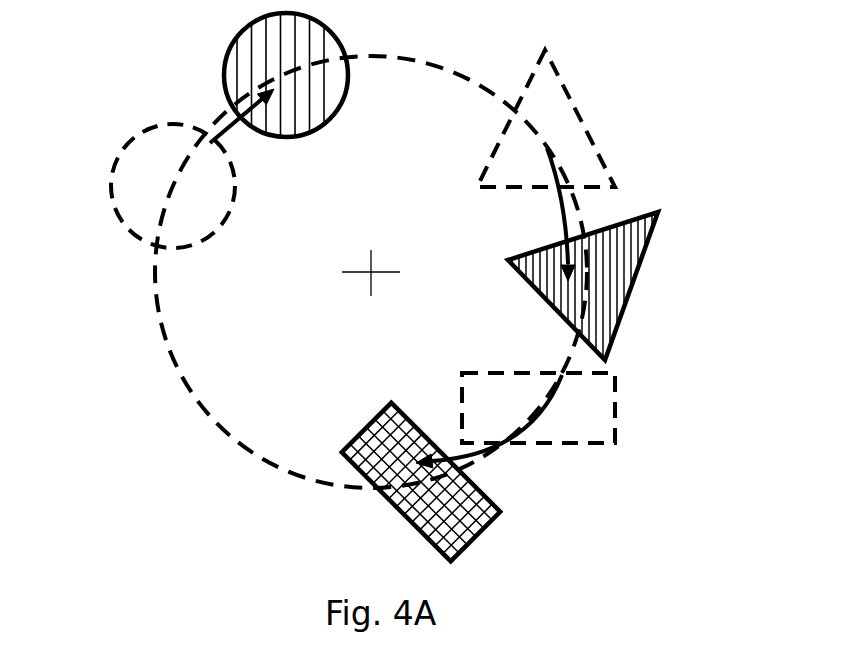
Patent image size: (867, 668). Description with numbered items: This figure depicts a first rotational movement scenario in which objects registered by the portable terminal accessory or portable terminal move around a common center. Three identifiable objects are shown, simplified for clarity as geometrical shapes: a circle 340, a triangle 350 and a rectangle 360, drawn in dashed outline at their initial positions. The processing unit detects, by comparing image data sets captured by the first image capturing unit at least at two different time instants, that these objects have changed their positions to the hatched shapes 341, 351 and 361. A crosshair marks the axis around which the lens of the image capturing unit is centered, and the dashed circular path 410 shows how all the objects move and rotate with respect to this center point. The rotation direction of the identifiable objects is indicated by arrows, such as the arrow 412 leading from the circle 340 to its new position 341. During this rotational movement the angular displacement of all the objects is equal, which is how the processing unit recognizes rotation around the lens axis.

The circular path of rotation 410 is at (230, 437).
The circle 340 is at (140, 230).
The changed position of circle 341 is at (225, 79).
The arrow 412 is at (226, 130).
The triangle 350 is at (528, 82).
The changed position of triangle 351 is at (632, 288).
The rectangle 360 is at (615, 410).
The changed position of rectangle 361 is at (487, 530).